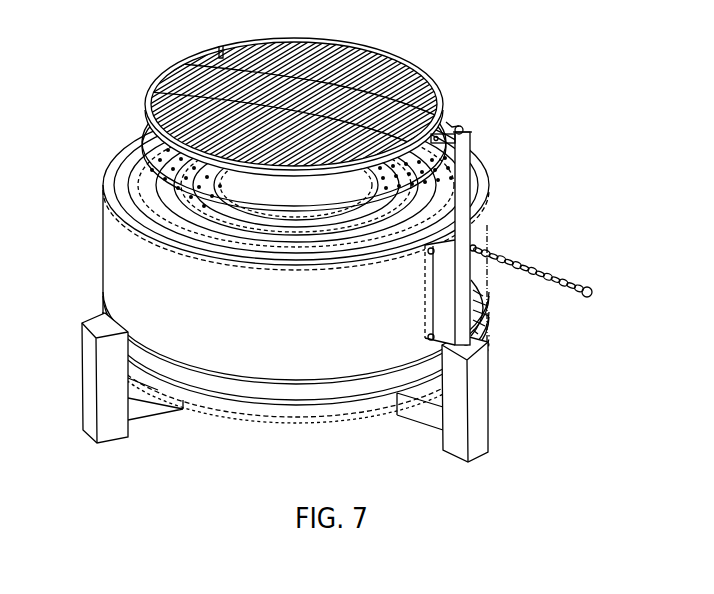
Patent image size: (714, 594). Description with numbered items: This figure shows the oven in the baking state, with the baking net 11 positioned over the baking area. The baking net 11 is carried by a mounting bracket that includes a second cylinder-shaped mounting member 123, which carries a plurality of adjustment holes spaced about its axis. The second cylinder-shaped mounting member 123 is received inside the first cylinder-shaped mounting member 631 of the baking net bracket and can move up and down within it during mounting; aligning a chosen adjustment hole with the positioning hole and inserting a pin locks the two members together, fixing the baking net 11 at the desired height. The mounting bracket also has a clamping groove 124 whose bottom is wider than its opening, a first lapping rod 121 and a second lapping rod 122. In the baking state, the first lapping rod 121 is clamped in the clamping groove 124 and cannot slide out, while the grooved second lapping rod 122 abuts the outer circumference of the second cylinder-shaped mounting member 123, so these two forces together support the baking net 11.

The baking net 11 is at (355, 43).
The first lapping rod 121 is at (463, 127).
The second lapping rod 122 is at (408, 205).
The second cylinder-shaped mounting member 123 is at (463, 202).
The clamping groove 124 is at (444, 143).
The first cylinder-shaped mounting member 631 is at (465, 315).